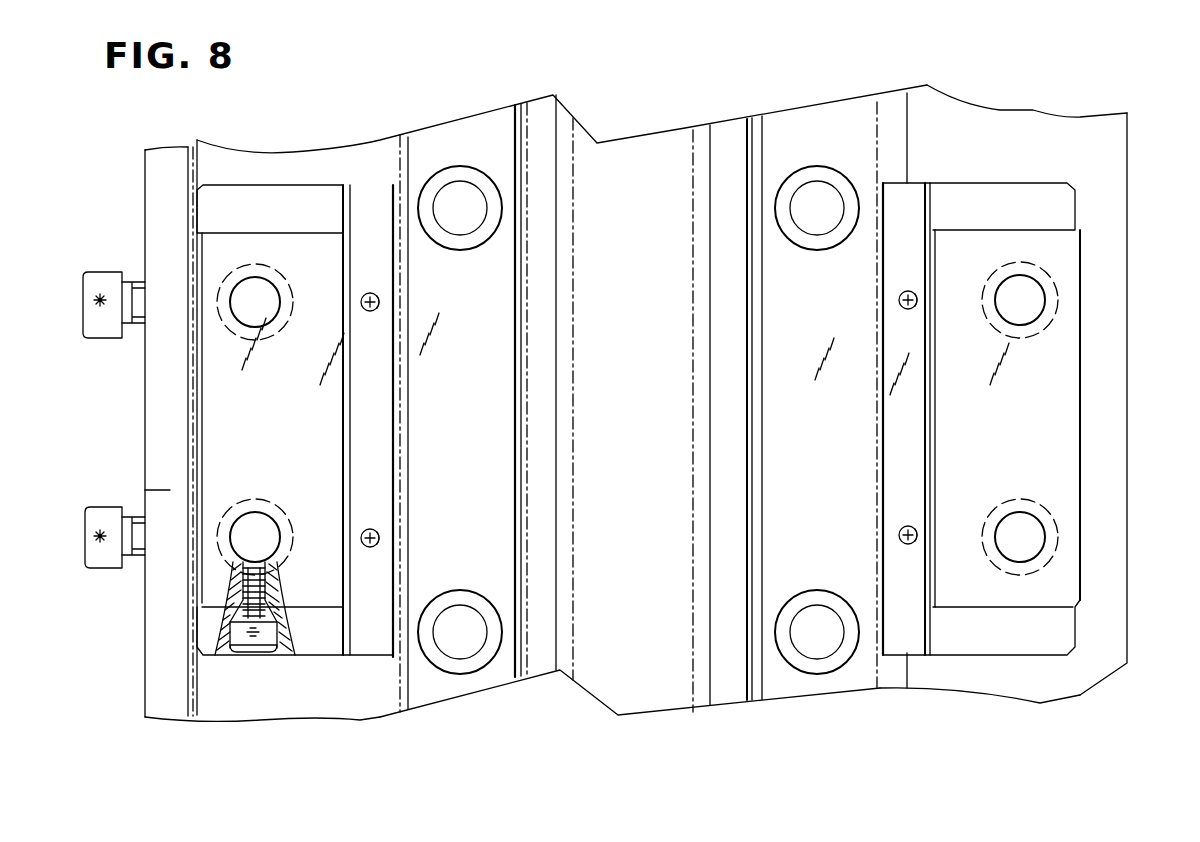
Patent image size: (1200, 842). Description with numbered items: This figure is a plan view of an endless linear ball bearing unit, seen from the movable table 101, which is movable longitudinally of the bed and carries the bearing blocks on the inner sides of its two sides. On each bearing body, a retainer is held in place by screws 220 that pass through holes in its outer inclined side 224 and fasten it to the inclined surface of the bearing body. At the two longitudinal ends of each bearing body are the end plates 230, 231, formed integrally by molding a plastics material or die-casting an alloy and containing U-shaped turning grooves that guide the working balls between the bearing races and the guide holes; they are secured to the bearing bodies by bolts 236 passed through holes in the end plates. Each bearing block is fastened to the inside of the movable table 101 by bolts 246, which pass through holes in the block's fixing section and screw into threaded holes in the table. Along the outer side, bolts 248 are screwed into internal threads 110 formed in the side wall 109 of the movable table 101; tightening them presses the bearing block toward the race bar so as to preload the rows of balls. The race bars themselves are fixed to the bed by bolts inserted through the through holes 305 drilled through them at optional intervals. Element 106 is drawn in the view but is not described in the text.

The movable table 101 is at (558, 680).
The second body member 106 is at (674, 692).
The side wall 109 is at (145, 398).
The internal threads 110 is at (172, 492).
The screws 220 is at (382, 300).
The outer inclined side 224 is at (390, 450).
The end plate 230 is at (322, 650).
The end plate 231 is at (258, 203).
The bolts 236 is at (257, 650).
The bolts 246 is at (258, 322).
The bolts 248 is at (107, 268).
The through holes 305 is at (483, 205).